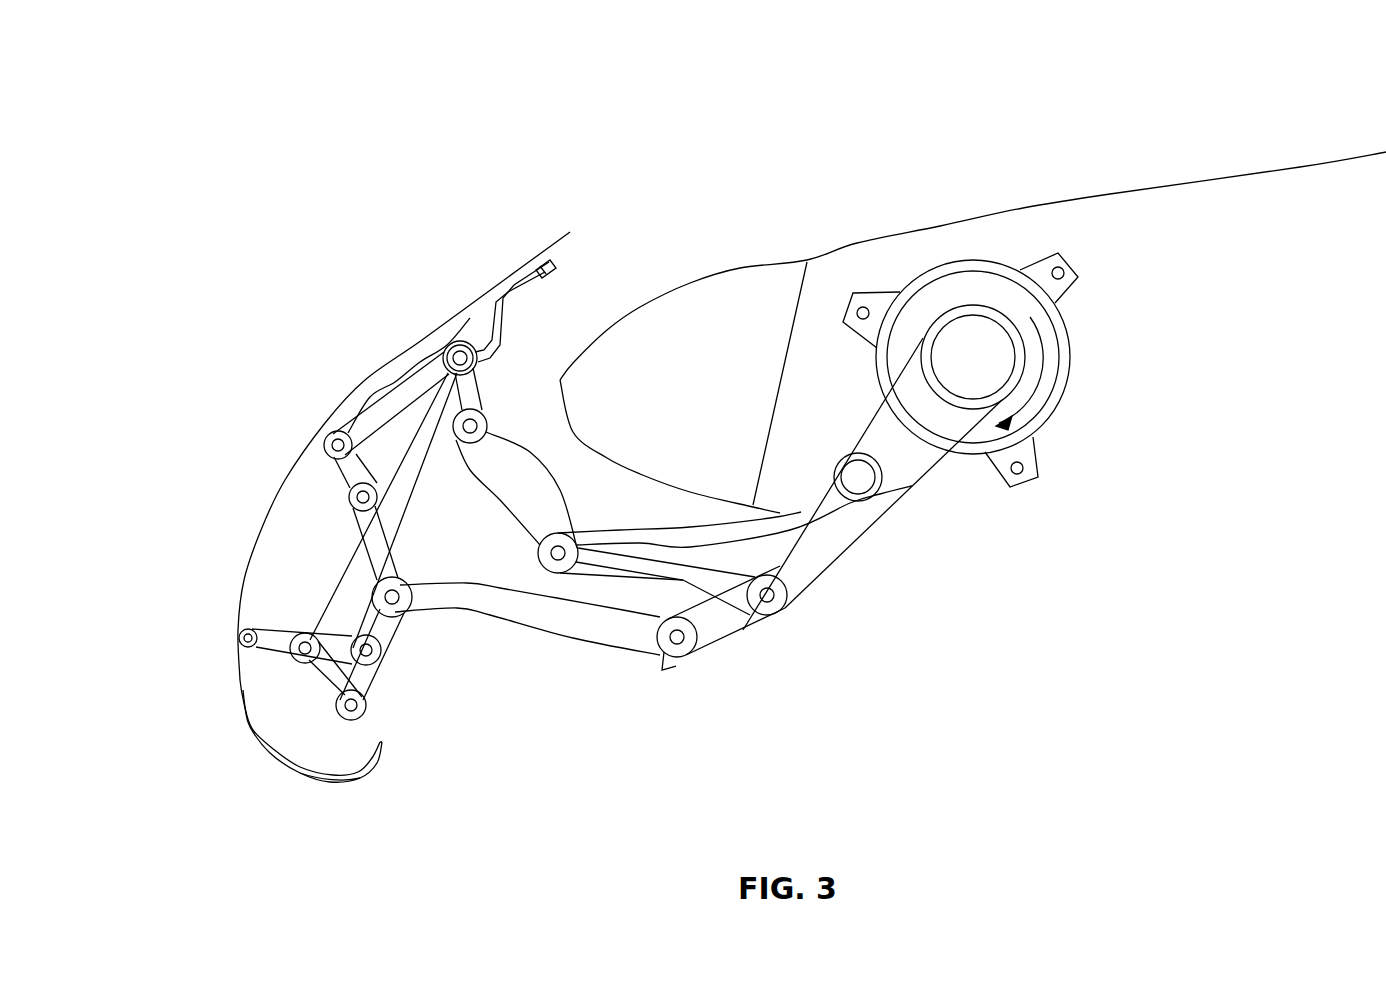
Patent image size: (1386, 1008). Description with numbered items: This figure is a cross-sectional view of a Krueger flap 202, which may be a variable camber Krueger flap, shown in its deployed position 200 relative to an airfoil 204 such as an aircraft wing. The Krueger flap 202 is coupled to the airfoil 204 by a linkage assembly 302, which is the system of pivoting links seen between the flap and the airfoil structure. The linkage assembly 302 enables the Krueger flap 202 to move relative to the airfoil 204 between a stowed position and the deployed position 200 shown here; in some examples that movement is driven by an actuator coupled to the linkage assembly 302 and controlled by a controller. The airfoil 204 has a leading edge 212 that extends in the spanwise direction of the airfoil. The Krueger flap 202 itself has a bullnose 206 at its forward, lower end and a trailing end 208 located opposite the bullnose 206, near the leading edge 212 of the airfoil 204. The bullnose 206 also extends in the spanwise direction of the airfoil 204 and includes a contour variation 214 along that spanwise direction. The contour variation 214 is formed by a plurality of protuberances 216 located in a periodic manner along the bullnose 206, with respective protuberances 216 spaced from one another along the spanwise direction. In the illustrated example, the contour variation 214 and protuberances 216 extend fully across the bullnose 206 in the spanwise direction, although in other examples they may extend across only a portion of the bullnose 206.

The deployed position 200 is at (1166, 57).
The Krueger flap 202 is at (256, 560).
The airfoil 204 is at (1017, 210).
The bullnose 206 is at (317, 782).
The trailing end 208 is at (557, 232).
The leading edge 212 is at (557, 394).
The contour variation 214 is at (380, 772).
The protuberances 216 is at (360, 783).
The linkage assembly 302 is at (732, 645).